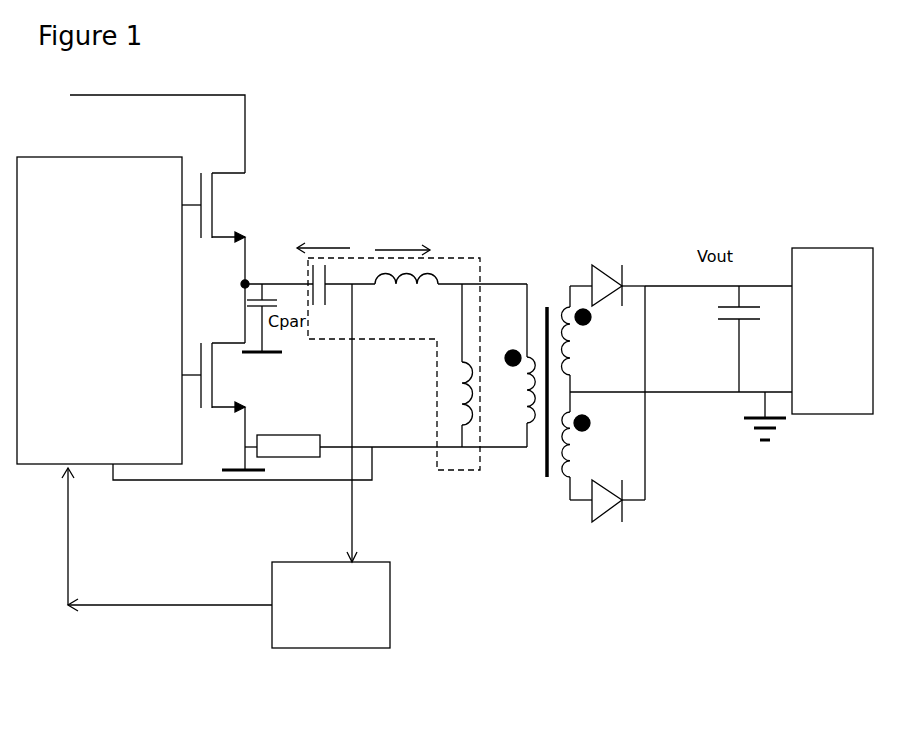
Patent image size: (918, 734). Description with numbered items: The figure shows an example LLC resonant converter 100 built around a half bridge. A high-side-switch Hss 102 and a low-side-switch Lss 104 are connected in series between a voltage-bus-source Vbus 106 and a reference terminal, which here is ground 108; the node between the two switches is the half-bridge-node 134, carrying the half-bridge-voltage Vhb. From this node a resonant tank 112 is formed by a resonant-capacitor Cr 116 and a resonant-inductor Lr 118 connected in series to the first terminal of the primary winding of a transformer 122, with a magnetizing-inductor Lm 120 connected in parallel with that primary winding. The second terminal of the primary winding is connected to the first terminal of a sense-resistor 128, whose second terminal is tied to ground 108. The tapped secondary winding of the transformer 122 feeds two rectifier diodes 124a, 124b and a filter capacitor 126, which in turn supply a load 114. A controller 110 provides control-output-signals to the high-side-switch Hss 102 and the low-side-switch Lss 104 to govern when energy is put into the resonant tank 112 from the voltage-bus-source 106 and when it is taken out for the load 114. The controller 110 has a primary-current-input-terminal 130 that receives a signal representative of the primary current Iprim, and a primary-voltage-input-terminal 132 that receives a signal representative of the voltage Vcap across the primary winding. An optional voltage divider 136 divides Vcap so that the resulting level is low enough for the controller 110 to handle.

The LLC resonant converter 100 is at (677, 90).
The high-side-switch Hss 102 is at (252, 187).
The low-side-switch Lss 104 is at (266, 374).
The voltage-bus-source Vbus 106 is at (215, 93).
The ground 108 is at (238, 471).
The controller 110 is at (112, 312).
The resonant tank 112 is at (463, 472).
The load 114 is at (829, 248).
The resonant-capacitor Cr 116 is at (326, 268).
The resonant-inductor Lr 118 is at (432, 275).
The magnetizing-inductor Lm 120 is at (468, 396).
The transformer 122 is at (550, 250).
The rectifier diode 124a is at (618, 288).
The rectifier diode 124b is at (600, 515).
The filter capacitor 126 is at (732, 321).
The sense-resistor 128 is at (290, 458).
The primary-current-input-terminal 130 is at (135, 437).
The primary-voltage-input-terminal 132 is at (68, 437).
The half-bridge-node 134 is at (250, 278).
The voltage divider 136 is at (322, 648).